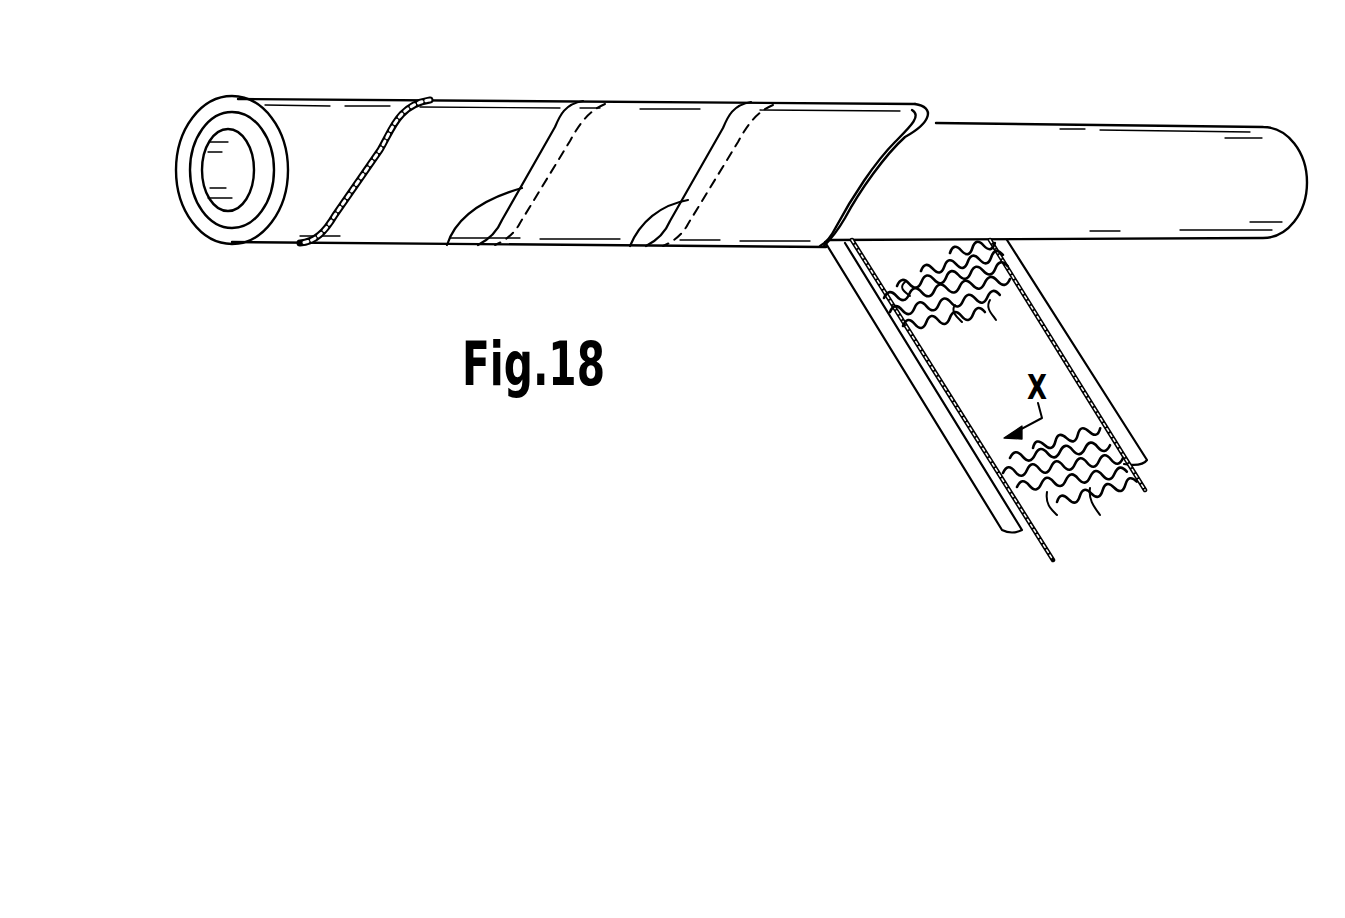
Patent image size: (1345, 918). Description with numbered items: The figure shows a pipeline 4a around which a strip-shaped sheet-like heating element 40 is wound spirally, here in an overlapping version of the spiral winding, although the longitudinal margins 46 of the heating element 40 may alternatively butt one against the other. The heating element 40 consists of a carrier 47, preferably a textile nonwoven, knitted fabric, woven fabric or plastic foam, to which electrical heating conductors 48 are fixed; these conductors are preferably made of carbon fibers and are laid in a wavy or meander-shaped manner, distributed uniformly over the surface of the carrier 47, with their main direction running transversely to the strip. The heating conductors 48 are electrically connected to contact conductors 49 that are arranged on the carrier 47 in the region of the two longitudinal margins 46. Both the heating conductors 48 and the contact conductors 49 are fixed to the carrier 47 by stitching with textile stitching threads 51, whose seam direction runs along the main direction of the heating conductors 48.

The pipeline 4a is at (1228, 177).
The carrier 47 is at (463, 135).
The longitudinal margins 46 is at (447, 245).
The electrical heating conductors 48 is at (1027, 298).
The contact conductors 49 is at (1057, 345).
The textile stitching threads 51 is at (990, 302).
The sheet-like heating element 40 is at (1162, 467).